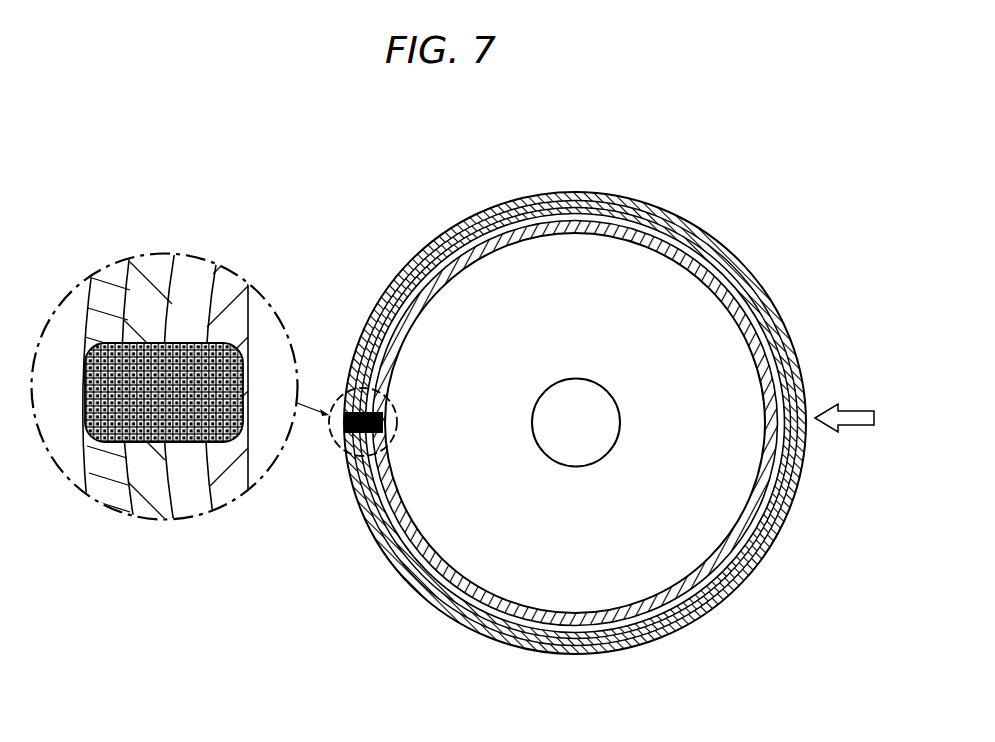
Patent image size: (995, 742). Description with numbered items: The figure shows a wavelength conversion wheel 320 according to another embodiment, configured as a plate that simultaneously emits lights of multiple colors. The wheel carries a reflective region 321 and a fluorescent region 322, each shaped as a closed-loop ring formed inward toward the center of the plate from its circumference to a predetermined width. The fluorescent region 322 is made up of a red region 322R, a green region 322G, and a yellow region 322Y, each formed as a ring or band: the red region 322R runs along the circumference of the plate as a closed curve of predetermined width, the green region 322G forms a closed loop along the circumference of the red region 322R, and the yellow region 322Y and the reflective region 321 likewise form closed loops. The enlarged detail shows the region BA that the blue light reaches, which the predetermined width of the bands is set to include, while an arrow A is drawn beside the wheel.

The wavelength conversion wheel 320 is at (591, 704).
The reflective region 321 is at (720, 566).
The fluorescent region 322 is at (653, 131).
The red region 322R is at (535, 199).
The green region 322G is at (575, 205).
The yellow region 322Y is at (627, 218).
The region that the blue light reaches BA is at (148, 432).
The direction arrow A is at (844, 410).